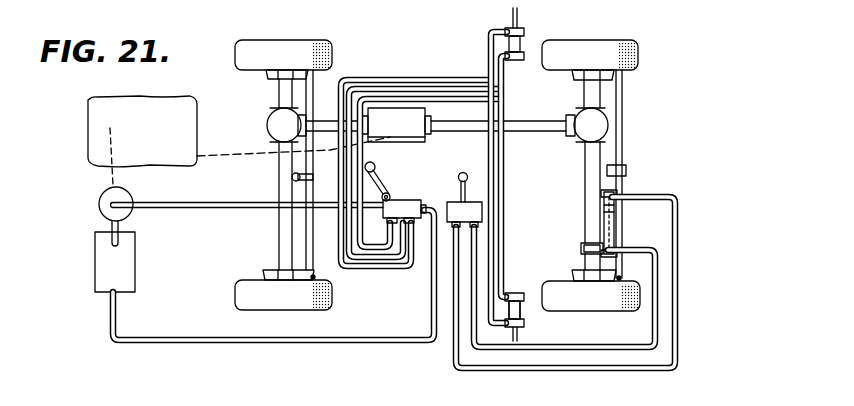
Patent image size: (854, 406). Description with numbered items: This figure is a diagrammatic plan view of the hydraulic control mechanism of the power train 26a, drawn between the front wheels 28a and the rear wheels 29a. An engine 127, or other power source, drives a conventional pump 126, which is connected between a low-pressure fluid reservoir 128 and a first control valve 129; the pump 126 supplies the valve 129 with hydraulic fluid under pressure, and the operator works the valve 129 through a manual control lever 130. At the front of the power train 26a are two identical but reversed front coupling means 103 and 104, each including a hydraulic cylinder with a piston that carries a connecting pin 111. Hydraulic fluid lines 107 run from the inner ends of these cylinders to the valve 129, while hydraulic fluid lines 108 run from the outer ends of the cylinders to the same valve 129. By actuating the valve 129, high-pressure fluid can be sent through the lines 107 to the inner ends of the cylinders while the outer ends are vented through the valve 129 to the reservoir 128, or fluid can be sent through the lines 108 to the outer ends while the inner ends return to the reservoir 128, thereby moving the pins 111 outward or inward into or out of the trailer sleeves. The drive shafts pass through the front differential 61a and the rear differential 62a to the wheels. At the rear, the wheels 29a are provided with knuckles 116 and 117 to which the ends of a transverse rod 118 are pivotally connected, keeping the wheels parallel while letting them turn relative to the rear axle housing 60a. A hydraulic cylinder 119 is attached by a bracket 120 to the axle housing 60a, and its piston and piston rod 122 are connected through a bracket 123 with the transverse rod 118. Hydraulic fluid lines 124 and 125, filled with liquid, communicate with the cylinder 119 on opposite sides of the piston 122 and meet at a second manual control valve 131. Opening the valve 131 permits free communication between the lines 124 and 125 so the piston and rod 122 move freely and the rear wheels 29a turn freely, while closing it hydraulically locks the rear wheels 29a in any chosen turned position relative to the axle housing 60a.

The power train 26a is at (85, 362).
The front wheels of the power train 28a is at (334, 46).
The rear wheels 29a is at (640, 57).
The rear axle housing 60a is at (585, 180).
The front differential 61a is at (267, 126).
The rear differential 62a is at (597, 125).
The front coupling means 103 is at (520, 70).
The front coupling means 104 is at (517, 293).
The hydraulic fluid lines 107 is at (497, 160).
The hydraulic fluid lines 108 is at (409, 82).
The connecting pin 111 is at (519, 16).
The knuckle 116 is at (272, 77).
The knuckle 117 is at (264, 272).
The transverse rod 118 is at (623, 147).
The hydraulic cylinder 119 is at (613, 209).
The bracket 120 is at (585, 251).
The piston and piston rod 122 is at (616, 221).
The bracket 123 is at (627, 170).
The hydraulic fluid line 124 is at (668, 197).
The hydraulic fluid line 125 is at (658, 262).
The pump 126 is at (99, 206).
The engine 127 is at (165, 159).
The low-pressure fluid reservoir 128 is at (95, 277).
The first control valve 129 is at (402, 201).
The manual control lever 130 is at (381, 178).
The second manual control valve 131 is at (483, 212).